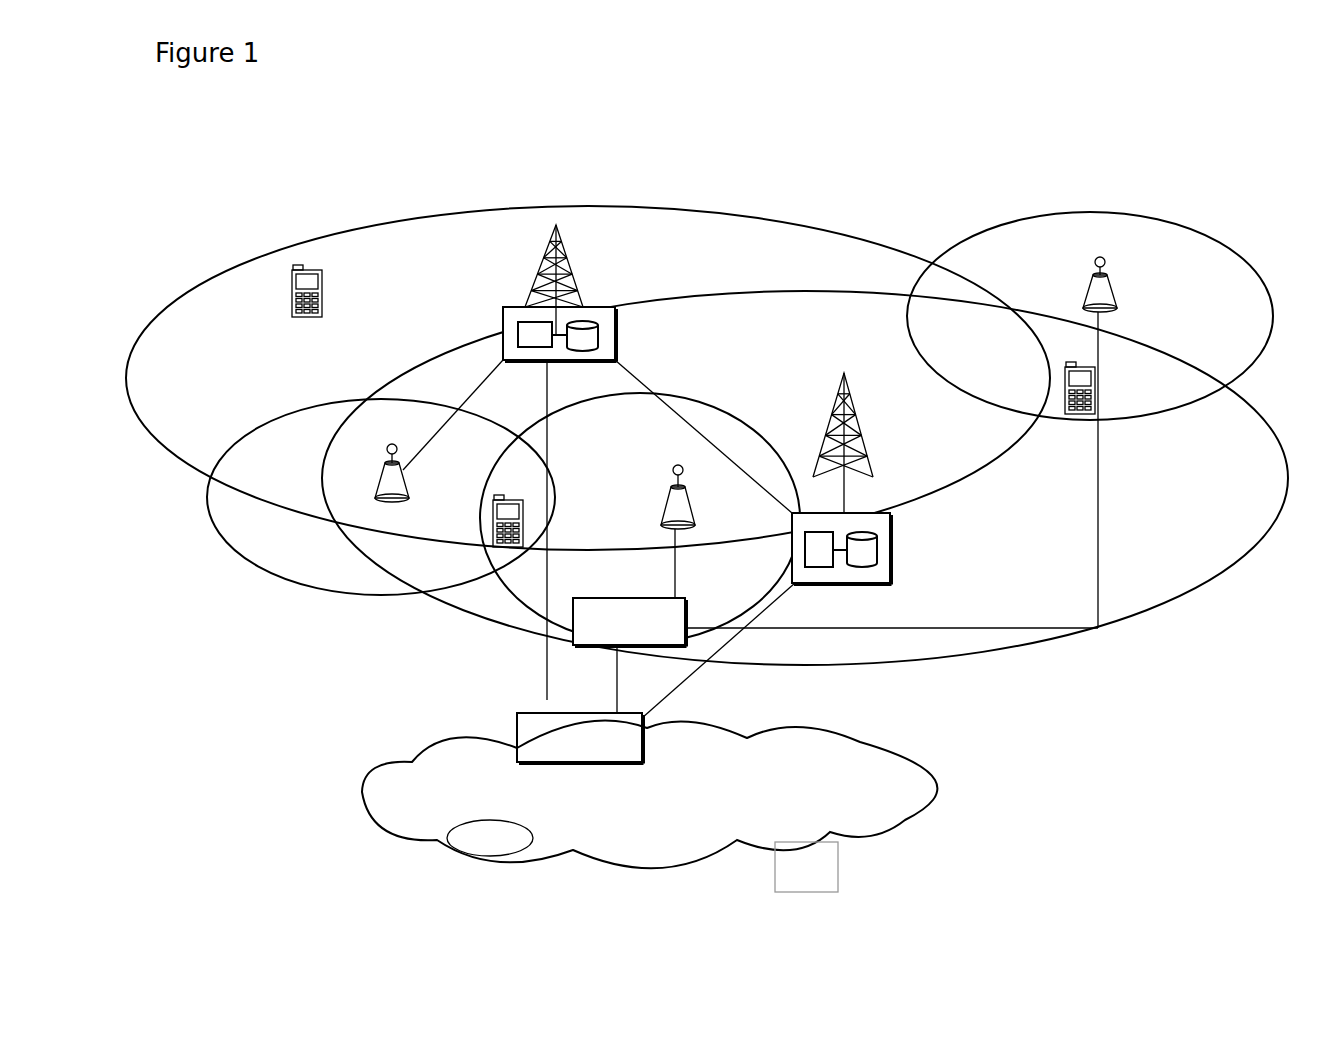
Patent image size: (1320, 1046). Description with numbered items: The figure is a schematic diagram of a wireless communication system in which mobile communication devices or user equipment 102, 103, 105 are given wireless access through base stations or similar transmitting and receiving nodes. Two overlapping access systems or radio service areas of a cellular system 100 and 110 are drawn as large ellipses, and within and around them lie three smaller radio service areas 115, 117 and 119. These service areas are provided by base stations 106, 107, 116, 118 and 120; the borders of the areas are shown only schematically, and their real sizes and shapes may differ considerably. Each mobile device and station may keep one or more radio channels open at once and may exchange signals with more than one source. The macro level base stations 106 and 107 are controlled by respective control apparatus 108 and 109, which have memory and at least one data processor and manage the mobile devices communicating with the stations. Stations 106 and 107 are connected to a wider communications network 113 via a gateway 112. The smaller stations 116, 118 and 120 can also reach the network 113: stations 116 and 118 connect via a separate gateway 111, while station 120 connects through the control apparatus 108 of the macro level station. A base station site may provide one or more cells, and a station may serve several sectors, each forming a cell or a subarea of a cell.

The radio service area of cellular system 100 is at (212, 247).
The mobile communication device 102 is at (292, 305).
The mobile communication device 103 is at (515, 550).
The mobile communication device 105 is at (1080, 414).
The macro level base station 106 is at (550, 277).
The macro level base station 107 is at (868, 442).
The control apparatus 108 is at (503, 323).
The control apparatus 109 is at (880, 573).
The radio service area of cellular system 110 is at (1174, 626).
The gateway 111 is at (580, 627).
The gateway 112 is at (520, 713).
The wider communications network 113 is at (440, 772).
The smaller radio service area 115 is at (1247, 226).
The smaller station 116 is at (1083, 287).
The smaller radio service area 117 is at (720, 392).
The smaller station 118 is at (680, 515).
The smaller radio service area 119 is at (285, 586).
The smaller station 120 is at (377, 478).